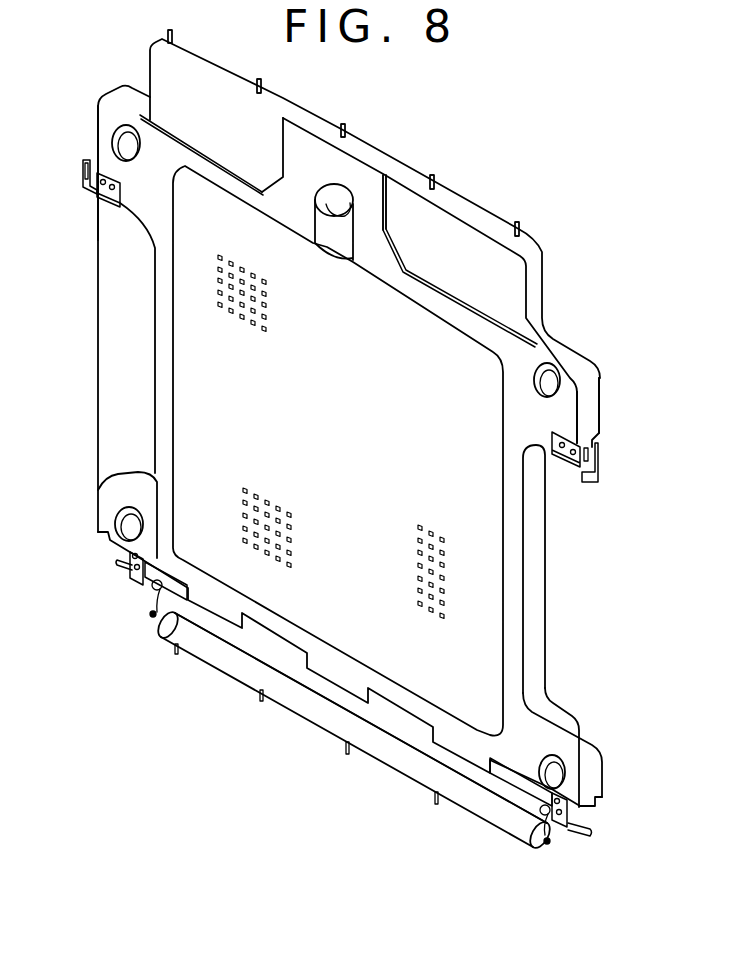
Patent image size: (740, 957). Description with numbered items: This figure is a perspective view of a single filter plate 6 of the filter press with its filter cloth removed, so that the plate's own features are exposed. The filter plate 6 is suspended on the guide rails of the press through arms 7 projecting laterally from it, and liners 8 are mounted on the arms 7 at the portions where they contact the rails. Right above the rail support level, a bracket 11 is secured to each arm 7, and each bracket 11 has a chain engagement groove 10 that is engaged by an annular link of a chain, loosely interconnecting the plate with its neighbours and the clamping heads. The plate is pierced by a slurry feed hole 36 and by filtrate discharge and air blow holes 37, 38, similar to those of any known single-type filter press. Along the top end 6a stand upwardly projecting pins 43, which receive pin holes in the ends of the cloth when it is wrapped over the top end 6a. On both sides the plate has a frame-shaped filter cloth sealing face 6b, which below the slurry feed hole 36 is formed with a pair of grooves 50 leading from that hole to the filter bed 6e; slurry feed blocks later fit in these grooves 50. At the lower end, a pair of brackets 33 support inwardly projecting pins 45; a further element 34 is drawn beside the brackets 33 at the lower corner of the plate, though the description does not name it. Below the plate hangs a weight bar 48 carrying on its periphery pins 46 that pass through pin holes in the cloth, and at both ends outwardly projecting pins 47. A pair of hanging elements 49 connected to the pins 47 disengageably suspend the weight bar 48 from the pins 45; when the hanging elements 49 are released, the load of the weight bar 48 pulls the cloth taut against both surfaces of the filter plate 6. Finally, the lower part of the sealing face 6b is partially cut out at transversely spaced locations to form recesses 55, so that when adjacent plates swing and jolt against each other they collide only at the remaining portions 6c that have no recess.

The filter plate 6 is at (347, 466).
The top end 6a is at (493, 217).
The filter cloth sealing face 6b is at (379, 265).
The portion having no recess 6c is at (228, 615).
The filter bed 6e is at (208, 337).
The arm 7 is at (135, 177).
The liner 8 is at (113, 194).
The chain engagement groove 10 is at (85, 176).
The bracket 11 is at (87, 184).
The bracket 33 is at (138, 577).
The pin 34 is at (122, 567).
The slurry feed hole 36 is at (331, 207).
The filtrate discharge and air blow hole 37 is at (128, 521).
The filtrate discharge and air blow hole 38 is at (125, 150).
The pin 43 is at (263, 84).
The pin 45 is at (160, 577).
The pin 46 is at (177, 656).
The pin 47 is at (154, 618).
The weight bar 48 is at (300, 706).
The hanging element 49 is at (152, 590).
The groove 50 is at (384, 228).
The recess 55 is at (279, 651).